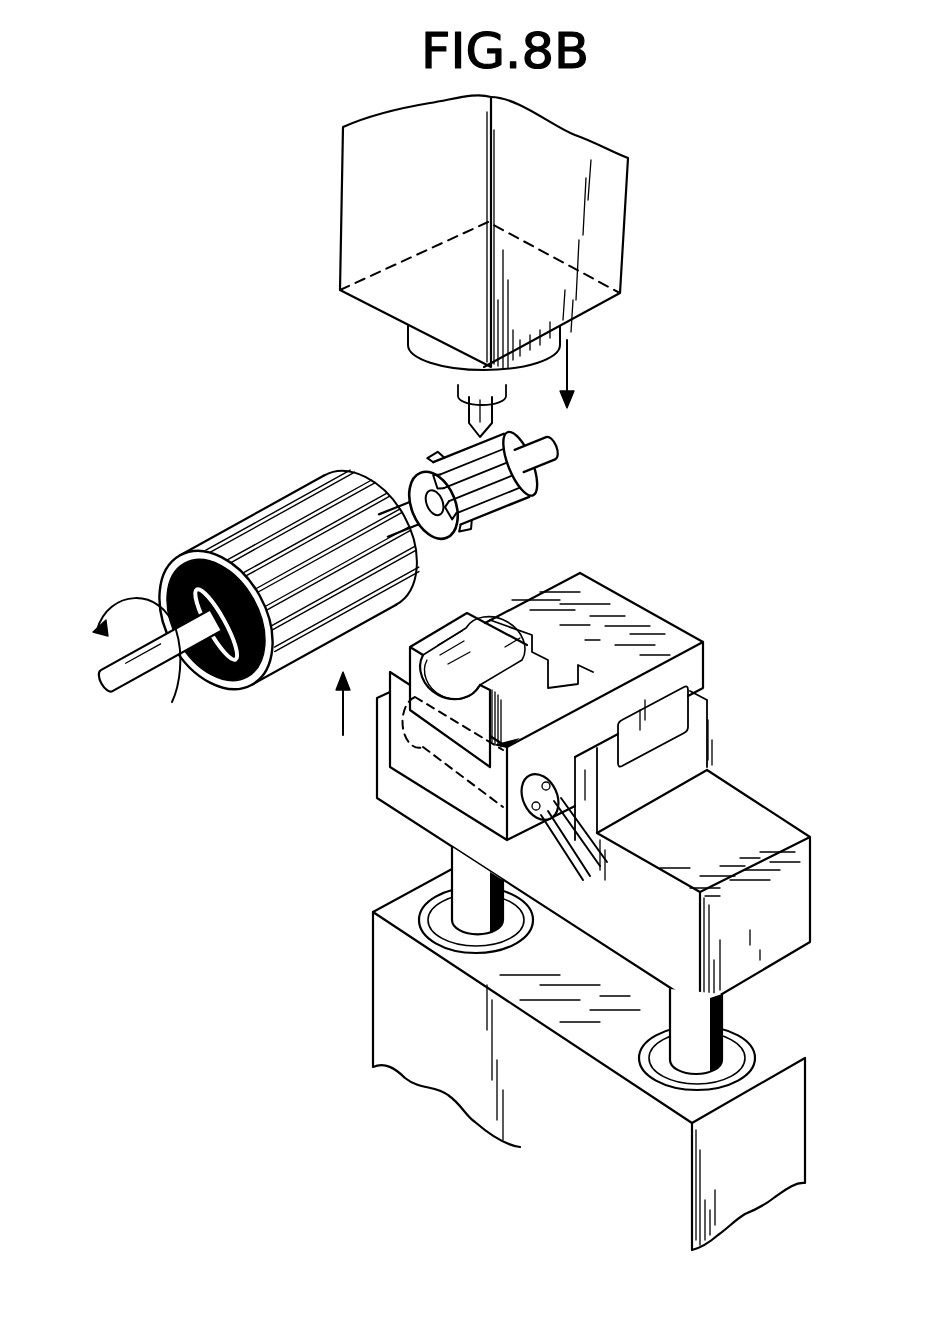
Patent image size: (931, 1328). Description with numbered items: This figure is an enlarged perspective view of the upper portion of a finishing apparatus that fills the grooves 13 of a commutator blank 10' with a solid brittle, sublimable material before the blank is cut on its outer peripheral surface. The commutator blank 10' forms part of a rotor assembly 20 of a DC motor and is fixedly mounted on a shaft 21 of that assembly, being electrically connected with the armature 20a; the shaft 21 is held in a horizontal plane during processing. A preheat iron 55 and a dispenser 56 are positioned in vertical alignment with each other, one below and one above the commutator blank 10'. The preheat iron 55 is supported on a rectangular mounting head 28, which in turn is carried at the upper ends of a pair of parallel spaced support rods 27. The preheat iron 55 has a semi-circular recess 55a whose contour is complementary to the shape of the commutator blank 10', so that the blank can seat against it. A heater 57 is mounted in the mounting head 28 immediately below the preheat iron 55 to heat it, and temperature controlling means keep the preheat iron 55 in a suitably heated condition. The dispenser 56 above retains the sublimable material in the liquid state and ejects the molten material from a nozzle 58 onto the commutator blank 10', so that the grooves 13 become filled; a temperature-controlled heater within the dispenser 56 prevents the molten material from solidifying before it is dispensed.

The dispenser 56 is at (622, 277).
The nozzle 58 is at (468, 415).
The rotor assembly 20 is at (243, 515).
The armature 20a is at (283, 673).
The shaft 21 is at (550, 447).
The grooves 13 is at (522, 490).
The commutator blank 10' is at (467, 513).
The preheat iron 55 is at (447, 614).
The semi-circular recess 55a is at (392, 663).
The mounting head 28 is at (708, 682).
The heater 57 is at (452, 772).
The support rods 27 is at (460, 879).